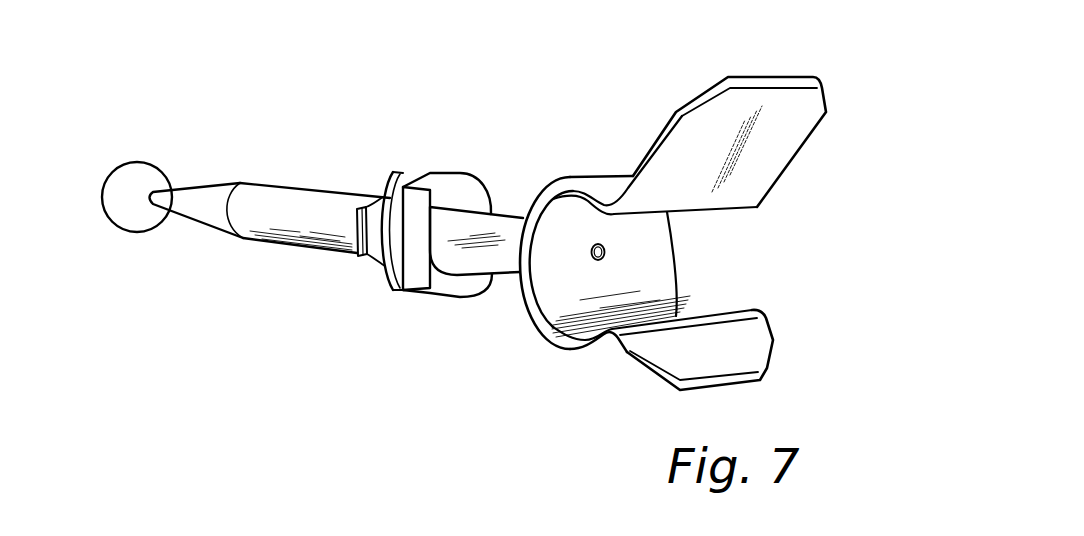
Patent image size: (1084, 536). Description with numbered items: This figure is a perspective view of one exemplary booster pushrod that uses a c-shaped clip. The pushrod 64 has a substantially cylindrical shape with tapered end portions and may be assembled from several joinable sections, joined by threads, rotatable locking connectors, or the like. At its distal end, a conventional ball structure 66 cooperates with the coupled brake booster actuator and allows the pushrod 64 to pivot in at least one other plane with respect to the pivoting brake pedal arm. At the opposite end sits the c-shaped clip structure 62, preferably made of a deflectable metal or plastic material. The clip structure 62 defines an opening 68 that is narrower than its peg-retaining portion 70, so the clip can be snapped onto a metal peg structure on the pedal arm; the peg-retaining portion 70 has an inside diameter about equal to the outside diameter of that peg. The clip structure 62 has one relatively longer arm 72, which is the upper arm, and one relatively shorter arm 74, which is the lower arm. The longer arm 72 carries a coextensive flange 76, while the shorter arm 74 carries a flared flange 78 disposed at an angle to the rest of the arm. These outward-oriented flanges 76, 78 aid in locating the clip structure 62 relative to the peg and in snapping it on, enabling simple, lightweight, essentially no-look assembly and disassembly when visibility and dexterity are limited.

The c-shaped clip structure 62 is at (634, 242).
The pushrod 64 is at (283, 203).
The ball structure 66 is at (146, 167).
The opening 68 is at (710, 242).
The peg-retaining portion 70 is at (558, 267).
The relatively longer arm 72 is at (771, 142).
The relatively shorter arm 74 is at (744, 370).
The coextensive flange 76 is at (765, 155).
The flared flange 78 is at (730, 381).